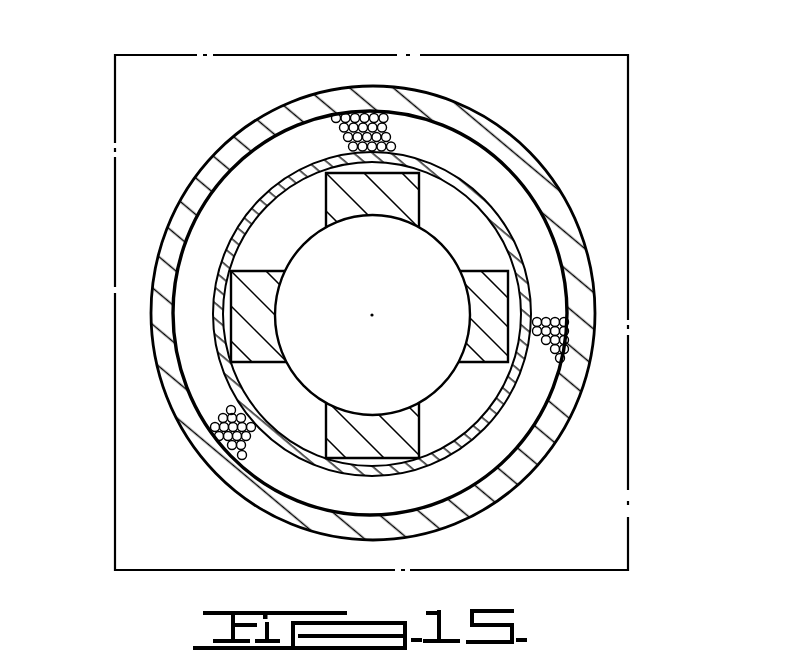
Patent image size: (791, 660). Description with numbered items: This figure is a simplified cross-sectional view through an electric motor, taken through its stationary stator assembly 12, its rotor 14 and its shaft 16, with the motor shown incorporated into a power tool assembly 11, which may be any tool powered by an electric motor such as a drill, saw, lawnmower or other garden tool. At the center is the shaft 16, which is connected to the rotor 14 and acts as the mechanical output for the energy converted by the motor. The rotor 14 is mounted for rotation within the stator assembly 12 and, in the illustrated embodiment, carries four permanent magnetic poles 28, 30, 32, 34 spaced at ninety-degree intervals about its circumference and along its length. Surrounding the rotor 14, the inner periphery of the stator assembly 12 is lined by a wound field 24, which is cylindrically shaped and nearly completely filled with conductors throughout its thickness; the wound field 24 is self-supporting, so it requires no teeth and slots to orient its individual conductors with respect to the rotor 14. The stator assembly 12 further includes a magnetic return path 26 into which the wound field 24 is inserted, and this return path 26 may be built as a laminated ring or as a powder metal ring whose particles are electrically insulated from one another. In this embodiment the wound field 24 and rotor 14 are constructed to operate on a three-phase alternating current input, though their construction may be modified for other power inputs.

The power tool assembly 11 is at (645, 466).
The stator assembly 12 is at (580, 214).
The rotor 14 is at (292, 232).
The shaft 16 is at (293, 338).
The wound field 24 is at (341, 113).
The magnetic return path 26 is at (376, 88).
The permanent magnetic pole 28 is at (392, 186).
The permanent magnetic pole 30 is at (503, 302).
The permanent magnetic pole 32 is at (333, 455).
The permanent magnetic pole 34 is at (243, 303).